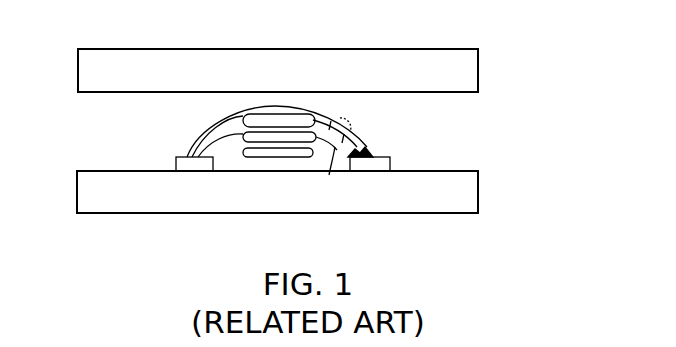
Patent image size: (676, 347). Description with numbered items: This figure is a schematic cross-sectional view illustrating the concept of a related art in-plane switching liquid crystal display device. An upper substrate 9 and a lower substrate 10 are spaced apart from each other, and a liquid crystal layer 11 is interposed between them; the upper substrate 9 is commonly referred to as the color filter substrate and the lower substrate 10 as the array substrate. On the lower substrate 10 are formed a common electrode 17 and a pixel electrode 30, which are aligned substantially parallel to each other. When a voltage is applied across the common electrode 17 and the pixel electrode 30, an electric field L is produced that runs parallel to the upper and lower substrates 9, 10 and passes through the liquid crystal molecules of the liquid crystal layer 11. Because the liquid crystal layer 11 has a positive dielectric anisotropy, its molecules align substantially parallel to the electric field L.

The upper substrate 9 is at (495, 45).
The lower substrate 10 is at (495, 170).
The liquid crystal layer 11 is at (495, 92).
The pixel electrode 30 is at (192, 160).
The common electrode 17 is at (377, 160).
The electric field L is at (329, 175).